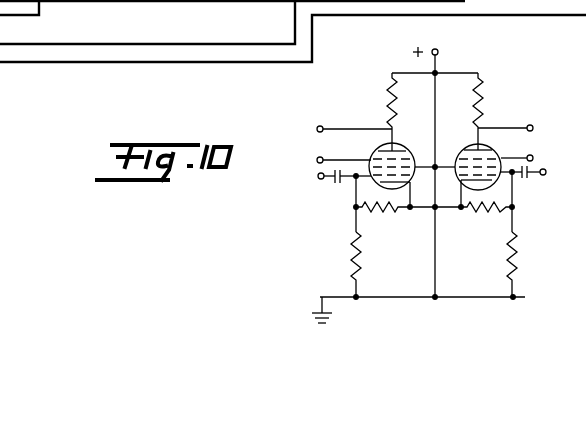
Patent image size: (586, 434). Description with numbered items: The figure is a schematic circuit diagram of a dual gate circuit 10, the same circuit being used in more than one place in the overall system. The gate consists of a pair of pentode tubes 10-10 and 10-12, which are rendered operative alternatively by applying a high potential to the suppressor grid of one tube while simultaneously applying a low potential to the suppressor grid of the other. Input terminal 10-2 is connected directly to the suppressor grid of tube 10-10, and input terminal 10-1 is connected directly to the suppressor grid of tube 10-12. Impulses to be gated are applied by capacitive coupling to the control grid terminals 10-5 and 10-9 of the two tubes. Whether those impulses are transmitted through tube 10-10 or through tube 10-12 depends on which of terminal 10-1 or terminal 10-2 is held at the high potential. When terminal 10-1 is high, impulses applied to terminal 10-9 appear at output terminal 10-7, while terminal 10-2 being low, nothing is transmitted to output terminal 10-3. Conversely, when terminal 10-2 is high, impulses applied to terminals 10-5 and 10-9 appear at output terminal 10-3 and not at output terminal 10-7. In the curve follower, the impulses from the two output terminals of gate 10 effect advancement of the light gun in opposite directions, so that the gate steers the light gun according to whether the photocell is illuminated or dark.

The dual gate circuit 10 is at (493, 97).
The input terminal 10-1 is at (532, 155).
The input terminal 10-2 is at (314, 160).
The output terminal 10-3 is at (316, 126).
The control grid terminal 10-5 is at (316, 179).
The output terminal 10-7 is at (529, 125).
The control grid terminal 10-9 is at (558, 158).
The pentode tube 10-10 is at (406, 146).
The pentode tube 10-12 is at (464, 149).